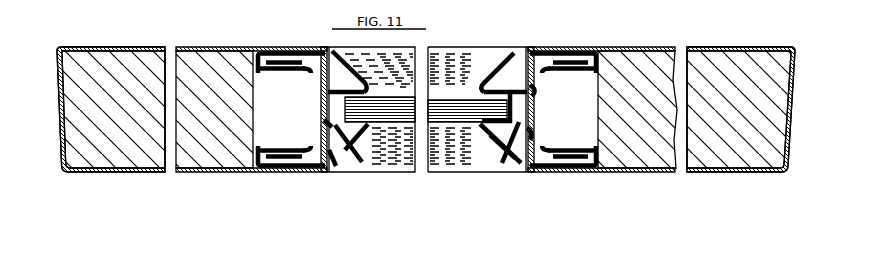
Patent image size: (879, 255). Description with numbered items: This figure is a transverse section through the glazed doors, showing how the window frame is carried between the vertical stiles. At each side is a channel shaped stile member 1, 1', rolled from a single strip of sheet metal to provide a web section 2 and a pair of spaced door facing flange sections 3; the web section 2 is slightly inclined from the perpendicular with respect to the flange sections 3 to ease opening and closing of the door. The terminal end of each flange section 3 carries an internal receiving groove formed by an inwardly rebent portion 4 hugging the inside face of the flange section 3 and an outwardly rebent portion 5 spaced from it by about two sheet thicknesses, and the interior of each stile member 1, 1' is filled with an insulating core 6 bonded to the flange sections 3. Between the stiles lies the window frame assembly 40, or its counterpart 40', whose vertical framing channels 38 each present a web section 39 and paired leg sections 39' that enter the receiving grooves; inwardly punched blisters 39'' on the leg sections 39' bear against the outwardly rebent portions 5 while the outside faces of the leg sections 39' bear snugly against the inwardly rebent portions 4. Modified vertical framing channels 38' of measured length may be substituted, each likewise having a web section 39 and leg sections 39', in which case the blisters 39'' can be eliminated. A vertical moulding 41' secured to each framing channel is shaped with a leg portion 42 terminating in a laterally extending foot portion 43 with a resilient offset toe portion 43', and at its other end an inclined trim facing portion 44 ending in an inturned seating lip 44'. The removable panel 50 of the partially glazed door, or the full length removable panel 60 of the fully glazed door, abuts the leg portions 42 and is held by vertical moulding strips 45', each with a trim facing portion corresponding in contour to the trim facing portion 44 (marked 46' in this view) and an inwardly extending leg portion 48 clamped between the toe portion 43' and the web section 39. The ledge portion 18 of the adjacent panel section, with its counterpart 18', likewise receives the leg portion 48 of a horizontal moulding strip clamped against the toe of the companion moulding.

The stile member 1 is at (111, 120).
The stile member 1' is at (741, 122).
The web section 2 is at (63, 137).
The door facing flange section 3 is at (104, 46).
The inwardly rebent portion 4 is at (288, 52).
The outwardly rebent portion 5 is at (308, 71).
The insulating core 6 is at (139, 57).
The ledge portion 18 is at (524, 97).
The frame member 18' is at (473, 125).
The vertical framing channel 38 is at (309, 109).
The modified vertical framing channel 38' is at (547, 109).
The web section 39 is at (431, 109).
The leg section 39' is at (416, 114).
The blister 39'' is at (430, 110).
The window frame assembly 40 is at (371, 139).
The glazing panel 40' is at (397, 144).
The vertical moulding 41' is at (427, 57).
The leg portion 42 is at (511, 91).
The foot portion 43 is at (425, 110).
The resilient offset toe portion 43' is at (433, 164).
The inclined trim facing portion 44 is at (419, 129).
The inturned seating lip 44' is at (423, 57).
The vertical moulding strip 45' is at (496, 170).
The spring arm 46' is at (502, 170).
The leg portion 48 is at (331, 168).
The removable panel 50 is at (472, 125).
The full length removable panel 60 is at (449, 152).